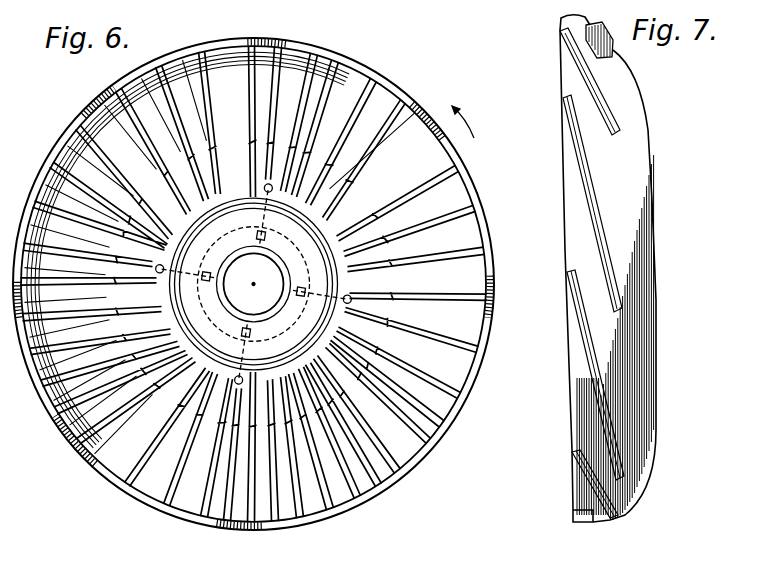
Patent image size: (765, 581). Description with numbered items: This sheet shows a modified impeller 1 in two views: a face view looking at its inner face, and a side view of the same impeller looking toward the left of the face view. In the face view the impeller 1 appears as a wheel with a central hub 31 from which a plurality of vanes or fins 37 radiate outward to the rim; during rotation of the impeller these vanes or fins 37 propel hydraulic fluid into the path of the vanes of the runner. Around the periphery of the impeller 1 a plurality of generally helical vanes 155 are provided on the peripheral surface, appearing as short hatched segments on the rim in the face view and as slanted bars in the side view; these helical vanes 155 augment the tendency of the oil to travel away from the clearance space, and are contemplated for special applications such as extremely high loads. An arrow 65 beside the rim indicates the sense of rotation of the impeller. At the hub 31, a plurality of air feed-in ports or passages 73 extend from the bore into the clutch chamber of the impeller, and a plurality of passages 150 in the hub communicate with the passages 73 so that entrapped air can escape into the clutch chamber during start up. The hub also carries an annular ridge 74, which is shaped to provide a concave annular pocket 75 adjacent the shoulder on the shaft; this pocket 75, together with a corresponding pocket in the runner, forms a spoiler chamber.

In FIG. 6, the impeller 1 is at (409, 94).
In FIG. 7, the impeller 1 is at (634, 157).
In FIG. 6, the helical vanes 155 is at (206, 44).
In FIG. 7, the helical vanes 155 is at (568, 20).
In FIG. 6, the direction of rotation arrow 65 is at (465, 127).
In FIG. 6, the vanes or fins 37 is at (103, 470).
In FIG. 6, the annular ridge 74 is at (280, 350).
In FIG. 6, the passages 150 is at (222, 290).
In FIG. 6, the air feed-in ports or passages 73 is at (276, 321).
In FIG. 6, the concave annular pocket 75 is at (190, 262).
In FIG. 6, the hub 31 is at (228, 249).